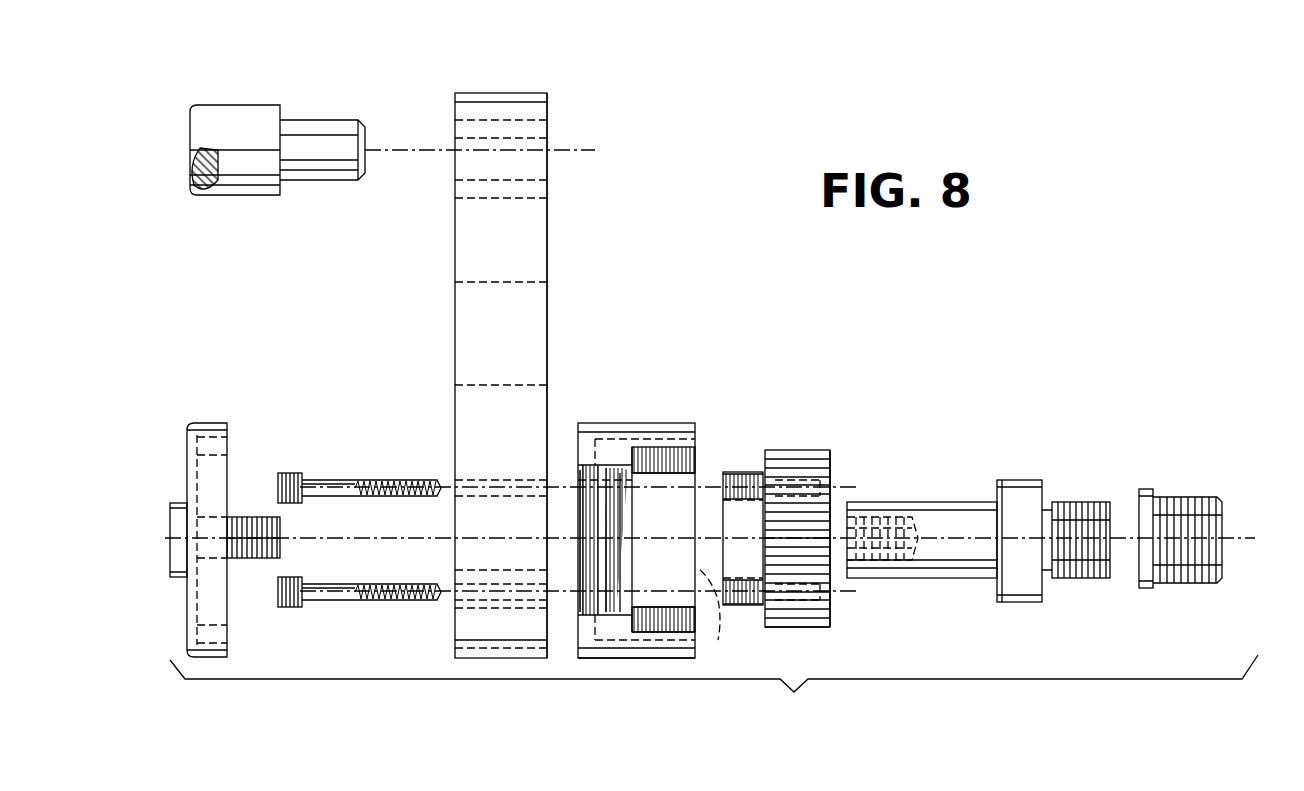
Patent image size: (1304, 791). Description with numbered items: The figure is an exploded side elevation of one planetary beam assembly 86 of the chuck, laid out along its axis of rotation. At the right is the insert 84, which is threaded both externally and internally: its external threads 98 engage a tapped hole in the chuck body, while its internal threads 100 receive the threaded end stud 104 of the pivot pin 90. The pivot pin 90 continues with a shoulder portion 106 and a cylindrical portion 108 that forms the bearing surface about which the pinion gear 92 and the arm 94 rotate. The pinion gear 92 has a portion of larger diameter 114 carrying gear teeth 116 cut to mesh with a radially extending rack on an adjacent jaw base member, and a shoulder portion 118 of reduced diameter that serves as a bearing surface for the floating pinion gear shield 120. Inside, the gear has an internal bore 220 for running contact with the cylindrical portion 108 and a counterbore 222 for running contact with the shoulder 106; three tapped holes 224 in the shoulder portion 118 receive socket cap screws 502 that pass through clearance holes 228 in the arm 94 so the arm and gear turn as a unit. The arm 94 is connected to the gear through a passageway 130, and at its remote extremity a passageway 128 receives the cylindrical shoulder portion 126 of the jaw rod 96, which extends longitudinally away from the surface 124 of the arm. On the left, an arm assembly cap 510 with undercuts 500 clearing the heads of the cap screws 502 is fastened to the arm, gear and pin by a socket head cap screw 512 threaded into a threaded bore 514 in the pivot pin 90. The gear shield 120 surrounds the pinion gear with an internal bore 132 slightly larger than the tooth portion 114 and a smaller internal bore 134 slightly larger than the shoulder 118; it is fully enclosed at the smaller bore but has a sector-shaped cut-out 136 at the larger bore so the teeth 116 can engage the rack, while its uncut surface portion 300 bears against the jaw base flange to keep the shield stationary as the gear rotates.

The insert 84 is at (1150, 588).
The planetary beam assembly 86 is at (821, 328).
The pivot pin 90 is at (979, 514).
The pinion gear 92 is at (810, 455).
The arm 94 is at (547, 312).
The jaw rod 96 is at (232, 100).
The external threads 98 is at (1200, 564).
The internal threads 100 is at (1222, 520).
The threaded end stud 104 is at (1065, 502).
The shoulder portion 106 is at (1030, 480).
The cylindrical portion 108 is at (930, 578).
The portion of larger diameter 114 is at (830, 450).
The gear teeth 116 is at (810, 597).
The shoulder portion 118 is at (740, 472).
The floating pinion gear shield 120 is at (656, 425).
The surface 124 is at (548, 244).
The cylindrical shoulder portion 126 is at (315, 120).
The passageway 128 is at (530, 178).
The passageway 130 is at (482, 577).
The internal bore 132 is at (688, 455).
The smaller internal bore 134 is at (580, 482).
The sector-shaped cut-out 136 is at (685, 600).
The internal bore 220 is at (730, 614).
The counterbore 222 is at (828, 480).
The tapped holes 224 is at (745, 475).
The clearance holes 228 is at (458, 480).
The surface portion 300 is at (590, 470).
The undercuts 500 is at (215, 460).
The socket cap screws 502 is at (387, 482).
The arm assembly cap 510 is at (225, 655).
The socket head cap screw 512 is at (178, 503).
The threaded bore 514 is at (845, 575).